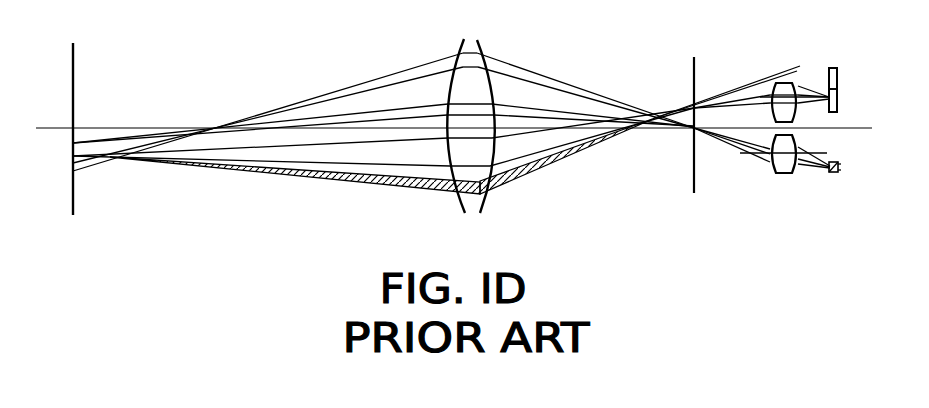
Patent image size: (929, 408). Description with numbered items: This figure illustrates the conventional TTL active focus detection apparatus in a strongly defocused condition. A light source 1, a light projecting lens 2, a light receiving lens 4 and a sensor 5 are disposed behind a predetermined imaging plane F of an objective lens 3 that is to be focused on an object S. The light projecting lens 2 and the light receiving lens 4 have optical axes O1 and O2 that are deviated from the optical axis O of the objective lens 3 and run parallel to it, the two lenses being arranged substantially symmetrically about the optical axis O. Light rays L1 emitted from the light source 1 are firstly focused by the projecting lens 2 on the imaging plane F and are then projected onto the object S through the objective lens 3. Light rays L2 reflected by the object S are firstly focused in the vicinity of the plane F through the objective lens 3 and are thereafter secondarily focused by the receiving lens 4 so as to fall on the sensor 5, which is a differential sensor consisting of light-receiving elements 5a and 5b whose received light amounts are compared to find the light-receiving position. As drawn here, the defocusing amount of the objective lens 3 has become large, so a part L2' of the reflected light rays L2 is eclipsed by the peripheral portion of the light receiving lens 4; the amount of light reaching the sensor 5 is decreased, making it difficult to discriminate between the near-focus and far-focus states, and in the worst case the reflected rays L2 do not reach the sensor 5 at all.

The object S is at (73, 110).
The optical axis of objective lens O is at (355, 127).
The objective lens 3 is at (478, 43).
The reflected light rays L2 is at (295, 198).
The part of reflected light rays L2' is at (640, 149).
The imaging plane F is at (693, 106).
The optical axis of light receiving lens O2 is at (763, 97).
The light receiving lens 4 is at (797, 84).
The sensor 5 is at (866, 65).
The light-receiving element 5a is at (839, 73).
The light-receiving element 5b is at (839, 100).
The optical axis of light projecting lens O1 is at (757, 154).
The light projecting lens 2 is at (783, 175).
The light rays L1 is at (807, 165).
The light source 1 is at (839, 158).